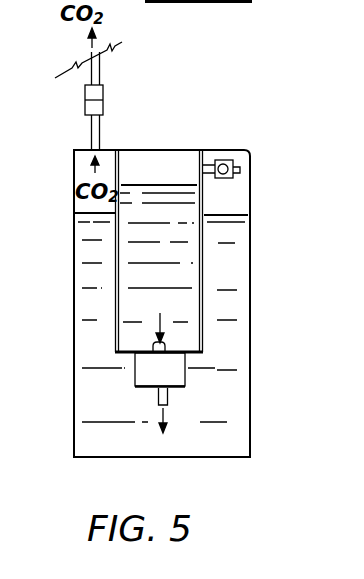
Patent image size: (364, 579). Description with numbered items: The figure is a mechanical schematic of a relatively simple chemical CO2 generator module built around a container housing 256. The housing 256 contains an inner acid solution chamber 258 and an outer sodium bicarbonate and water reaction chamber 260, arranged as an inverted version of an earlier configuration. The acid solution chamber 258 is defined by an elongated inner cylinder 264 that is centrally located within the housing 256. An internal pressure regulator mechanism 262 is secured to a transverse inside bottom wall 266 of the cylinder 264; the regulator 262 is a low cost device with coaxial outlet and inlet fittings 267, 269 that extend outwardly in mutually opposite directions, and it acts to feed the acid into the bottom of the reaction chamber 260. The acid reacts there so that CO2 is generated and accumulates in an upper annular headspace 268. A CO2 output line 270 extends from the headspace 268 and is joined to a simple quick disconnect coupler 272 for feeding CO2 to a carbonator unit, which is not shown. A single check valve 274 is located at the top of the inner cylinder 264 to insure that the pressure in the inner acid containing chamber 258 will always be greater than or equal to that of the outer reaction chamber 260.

The container housing 256 is at (250, 355).
The inner acid solution chamber 258 is at (168, 160).
The outer sodium bicarbonate and water reaction chamber 260 is at (248, 412).
The internal pressure regulator mechanism 262 is at (185, 387).
The elongated inner cylinder 264 is at (203, 277).
The transverse inside bottom wall 266 is at (123, 353).
The outlet fitting 267 is at (170, 403).
The upper annular headspace 268 is at (237, 196).
The inlet fitting 269 is at (160, 348).
The CO2 output line 270 is at (100, 133).
The quick disconnect coupler 272 is at (103, 97).
The check valve 274 is at (230, 160).